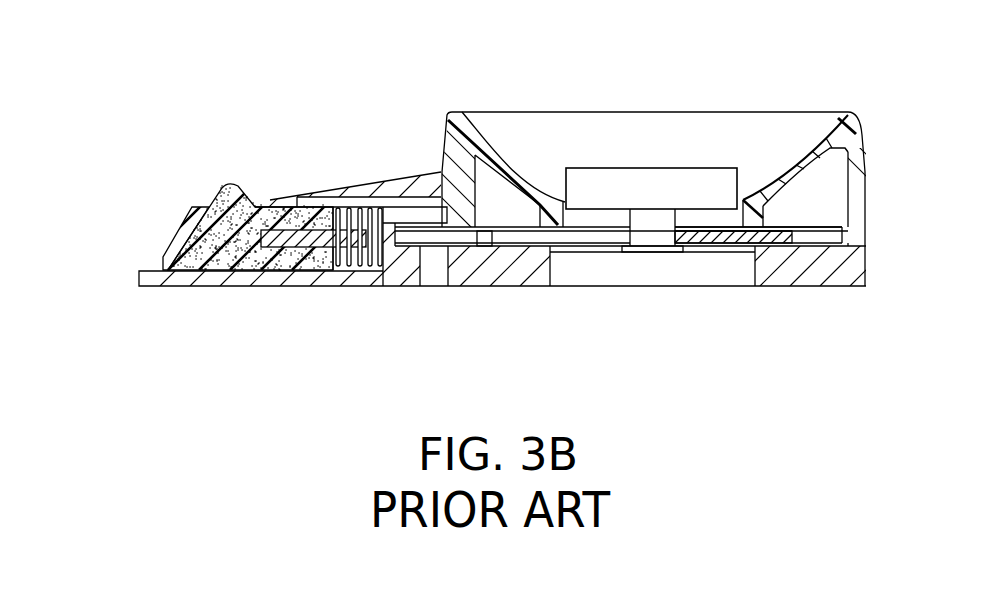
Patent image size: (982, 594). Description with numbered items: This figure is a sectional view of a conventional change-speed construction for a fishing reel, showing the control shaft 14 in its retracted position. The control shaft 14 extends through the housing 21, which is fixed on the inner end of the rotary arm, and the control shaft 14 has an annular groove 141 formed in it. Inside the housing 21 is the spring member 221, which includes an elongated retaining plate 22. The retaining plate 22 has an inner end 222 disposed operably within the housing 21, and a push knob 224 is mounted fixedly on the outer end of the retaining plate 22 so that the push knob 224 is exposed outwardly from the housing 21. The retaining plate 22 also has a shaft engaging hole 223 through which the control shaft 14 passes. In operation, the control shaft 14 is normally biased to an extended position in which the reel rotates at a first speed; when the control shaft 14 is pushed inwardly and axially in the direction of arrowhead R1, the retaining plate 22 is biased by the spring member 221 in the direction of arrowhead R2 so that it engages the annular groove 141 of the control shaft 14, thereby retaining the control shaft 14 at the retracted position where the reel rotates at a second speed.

The control shaft 14 is at (590, 185).
The annular groove 141 is at (630, 246).
The housing 21 is at (475, 262).
The retaining plate 22 is at (720, 233).
The spring member 221 is at (353, 270).
The inner end 222 is at (767, 239).
The shaft engaging hole 223 is at (684, 245).
The push knob 224 is at (220, 252).
The arrowhead R1 is at (647, 38).
The arrowhead R2 is at (137, 247).